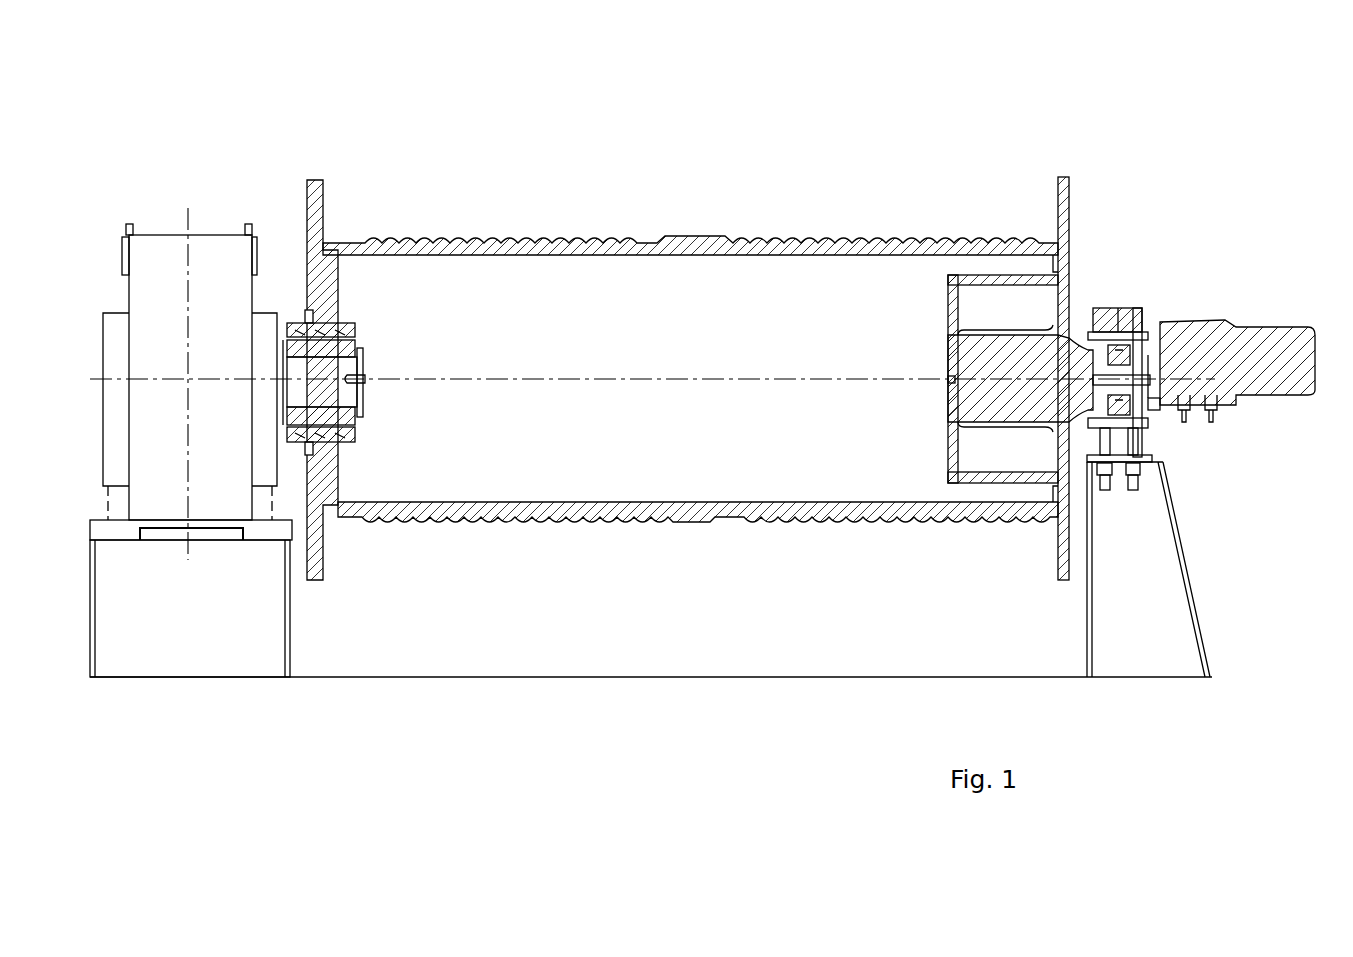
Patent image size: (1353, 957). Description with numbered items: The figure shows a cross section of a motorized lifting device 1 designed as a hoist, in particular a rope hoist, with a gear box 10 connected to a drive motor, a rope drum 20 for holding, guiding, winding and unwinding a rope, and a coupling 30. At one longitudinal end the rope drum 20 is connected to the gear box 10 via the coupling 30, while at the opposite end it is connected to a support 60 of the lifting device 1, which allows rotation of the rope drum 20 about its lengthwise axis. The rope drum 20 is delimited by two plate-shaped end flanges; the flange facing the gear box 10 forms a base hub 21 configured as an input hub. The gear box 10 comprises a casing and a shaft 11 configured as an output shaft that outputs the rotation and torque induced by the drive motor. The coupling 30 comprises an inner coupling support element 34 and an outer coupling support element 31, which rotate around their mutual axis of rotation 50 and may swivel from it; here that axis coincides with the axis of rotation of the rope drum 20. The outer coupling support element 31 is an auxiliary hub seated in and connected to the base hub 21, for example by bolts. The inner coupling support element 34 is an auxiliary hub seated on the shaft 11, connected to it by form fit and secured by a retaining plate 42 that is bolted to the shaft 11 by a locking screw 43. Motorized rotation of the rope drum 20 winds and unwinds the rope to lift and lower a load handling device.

The lifting device 1 is at (852, 157).
The gear box 10 is at (168, 232).
The shaft 11 is at (342, 392).
The rope drum 20 is at (540, 237).
The base hub 21 is at (323, 294).
The coupling 30 is at (295, 322).
The outer coupling support element 31 is at (338, 442).
The inner coupling support element 34 is at (343, 345).
The retaining plate 42 is at (365, 367).
The locking screw 43 is at (362, 385).
The mutual axis of rotation 50 is at (608, 380).
The support 60 is at (1137, 305).